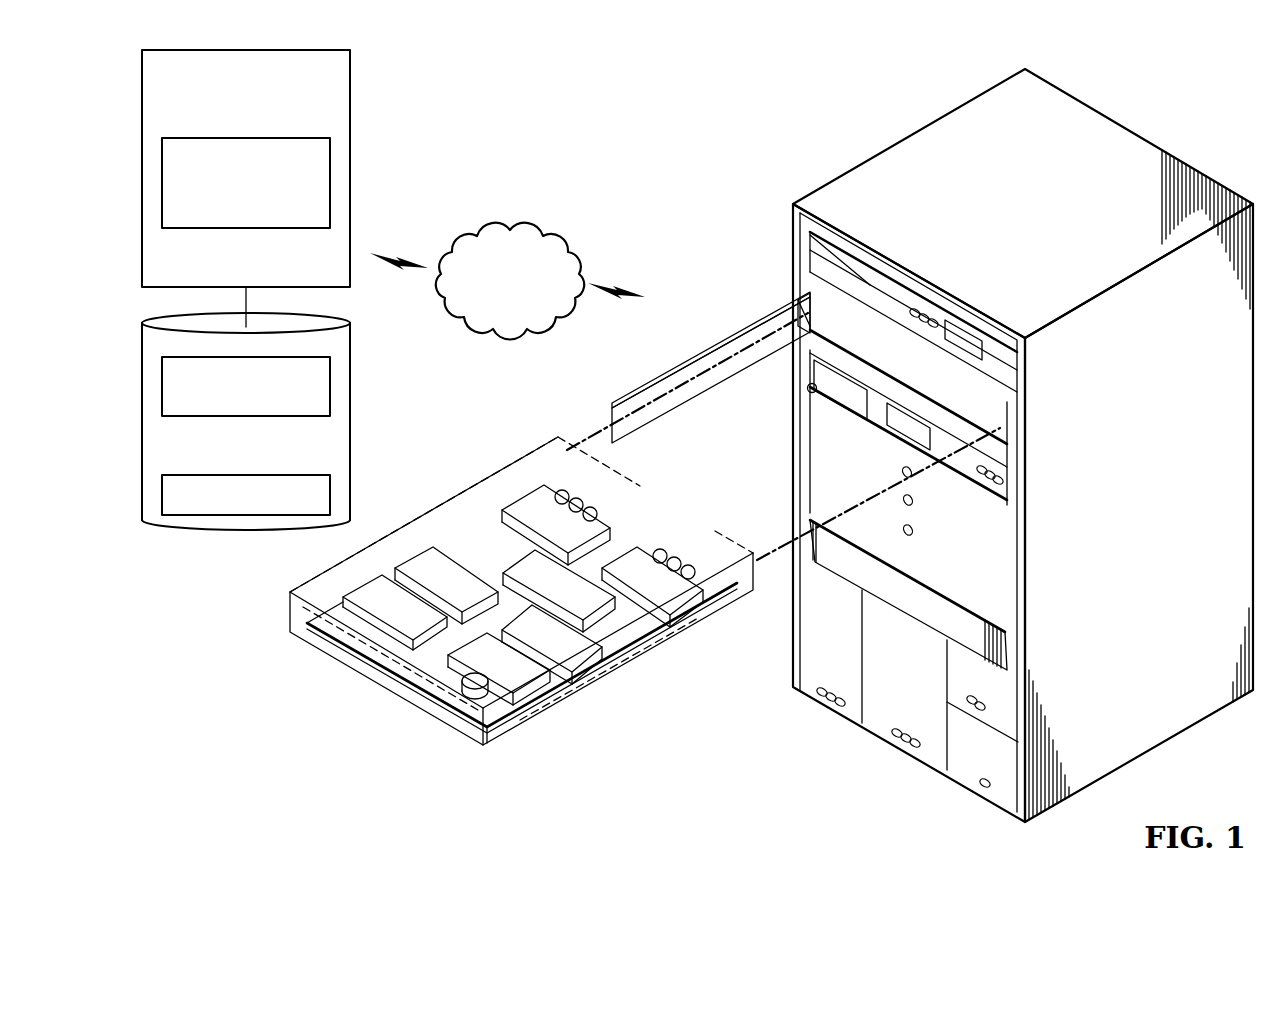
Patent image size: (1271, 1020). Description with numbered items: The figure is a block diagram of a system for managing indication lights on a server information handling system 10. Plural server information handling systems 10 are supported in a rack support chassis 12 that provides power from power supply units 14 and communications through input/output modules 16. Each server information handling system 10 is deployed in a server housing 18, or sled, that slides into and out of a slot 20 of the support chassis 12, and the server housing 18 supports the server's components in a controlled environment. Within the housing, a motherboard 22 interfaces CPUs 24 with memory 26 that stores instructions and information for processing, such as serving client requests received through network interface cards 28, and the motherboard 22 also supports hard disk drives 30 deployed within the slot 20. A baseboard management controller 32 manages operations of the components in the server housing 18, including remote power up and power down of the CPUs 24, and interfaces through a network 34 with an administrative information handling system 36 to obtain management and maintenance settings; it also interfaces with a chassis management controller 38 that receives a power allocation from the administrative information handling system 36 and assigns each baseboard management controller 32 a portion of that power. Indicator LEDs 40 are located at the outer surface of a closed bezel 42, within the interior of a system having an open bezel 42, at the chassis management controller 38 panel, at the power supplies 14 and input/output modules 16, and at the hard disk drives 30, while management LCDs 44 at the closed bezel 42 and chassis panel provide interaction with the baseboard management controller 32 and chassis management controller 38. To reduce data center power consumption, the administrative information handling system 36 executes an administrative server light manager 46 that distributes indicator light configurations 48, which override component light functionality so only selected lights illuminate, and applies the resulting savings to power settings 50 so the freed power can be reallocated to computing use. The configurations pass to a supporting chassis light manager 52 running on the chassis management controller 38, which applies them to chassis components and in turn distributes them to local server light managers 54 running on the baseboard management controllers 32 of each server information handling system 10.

The server information handling system 10 is at (653, 750).
The rack support chassis 12 is at (1185, 158).
The power supply unit 14 is at (878, 670).
The input/output module 16 is at (985, 785).
The server housing 18 is at (388, 696).
The slot 20 is at (993, 408).
The motherboard 22 is at (345, 646).
The CPU 24 is at (413, 556).
The memory 26 is at (360, 585).
The network interface card 28 is at (612, 608).
The hard disk drive 30 is at (528, 498).
The baseboard management controller 32 is at (547, 702).
The network 34 is at (508, 231).
The administrative information handling system 36 is at (352, 168).
The chassis management controller 38 is at (806, 384).
The indicator LED 40 is at (863, 795).
The bezel 42 is at (867, 130).
The management LCD 44 is at (858, 441).
The administrative server light manager 46 is at (245, 229).
The indicator light configurations 48 is at (228, 417).
The power settings 50 is at (275, 475).
The supporting chassis light manager 52 is at (808, 389).
The local server light manager 54 is at (490, 716).